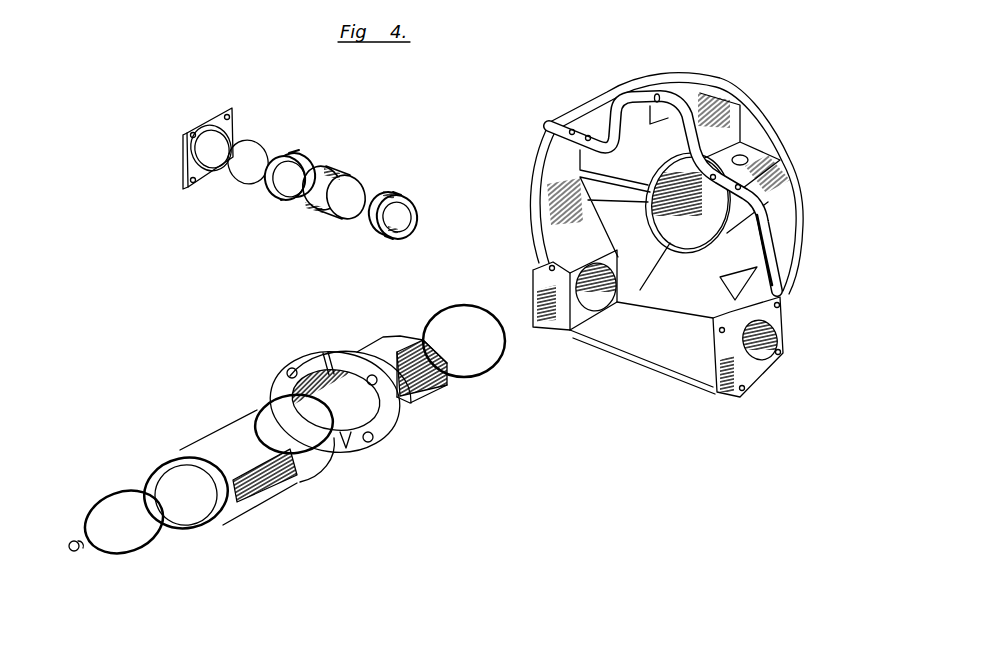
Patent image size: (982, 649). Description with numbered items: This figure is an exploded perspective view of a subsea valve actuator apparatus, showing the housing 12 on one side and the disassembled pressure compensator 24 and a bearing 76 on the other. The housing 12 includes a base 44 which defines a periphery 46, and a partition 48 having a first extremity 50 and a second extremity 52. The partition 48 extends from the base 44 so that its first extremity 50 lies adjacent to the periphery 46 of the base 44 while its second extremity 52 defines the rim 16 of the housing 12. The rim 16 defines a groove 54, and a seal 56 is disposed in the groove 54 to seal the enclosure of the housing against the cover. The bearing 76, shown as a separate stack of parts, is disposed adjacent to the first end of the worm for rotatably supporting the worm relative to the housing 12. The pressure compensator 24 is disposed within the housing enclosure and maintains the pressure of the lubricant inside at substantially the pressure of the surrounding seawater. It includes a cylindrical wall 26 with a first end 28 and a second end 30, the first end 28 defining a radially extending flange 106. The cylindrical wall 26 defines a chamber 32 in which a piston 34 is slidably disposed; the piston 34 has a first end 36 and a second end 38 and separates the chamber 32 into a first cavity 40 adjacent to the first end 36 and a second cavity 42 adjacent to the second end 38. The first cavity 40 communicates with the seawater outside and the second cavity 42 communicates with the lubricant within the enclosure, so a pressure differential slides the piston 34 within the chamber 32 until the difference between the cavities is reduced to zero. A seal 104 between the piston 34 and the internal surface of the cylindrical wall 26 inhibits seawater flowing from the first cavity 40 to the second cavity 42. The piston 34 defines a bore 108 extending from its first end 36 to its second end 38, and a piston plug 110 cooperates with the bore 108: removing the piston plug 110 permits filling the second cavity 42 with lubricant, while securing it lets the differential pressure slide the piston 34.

The housing 12 is at (700, 86).
The rim 16 is at (780, 330).
The pressure compensator 24 is at (198, 422).
The cylindrical wall 26 is at (375, 343).
The first end 28 is at (390, 437).
The second end 30 is at (437, 395).
The chamber 32 is at (355, 420).
The piston 34 is at (250, 457).
The first end 36 is at (203, 514).
The second end 38 is at (278, 498).
The first cavity 40 is at (292, 362).
The second cavity 42 is at (468, 382).
The base 44 is at (687, 330).
The periphery 46 is at (630, 333).
The partition 48 is at (785, 253).
The first extremity 50 is at (790, 167).
The second extremity 52 is at (774, 211).
The groove 54 is at (717, 392).
The seal 56 is at (667, 370).
The bearing 76 is at (233, 132).
The seal 104 is at (262, 414).
The radially extending flange 106 is at (410, 388).
The bore 108 is at (206, 472).
The piston plug 110 is at (73, 550).